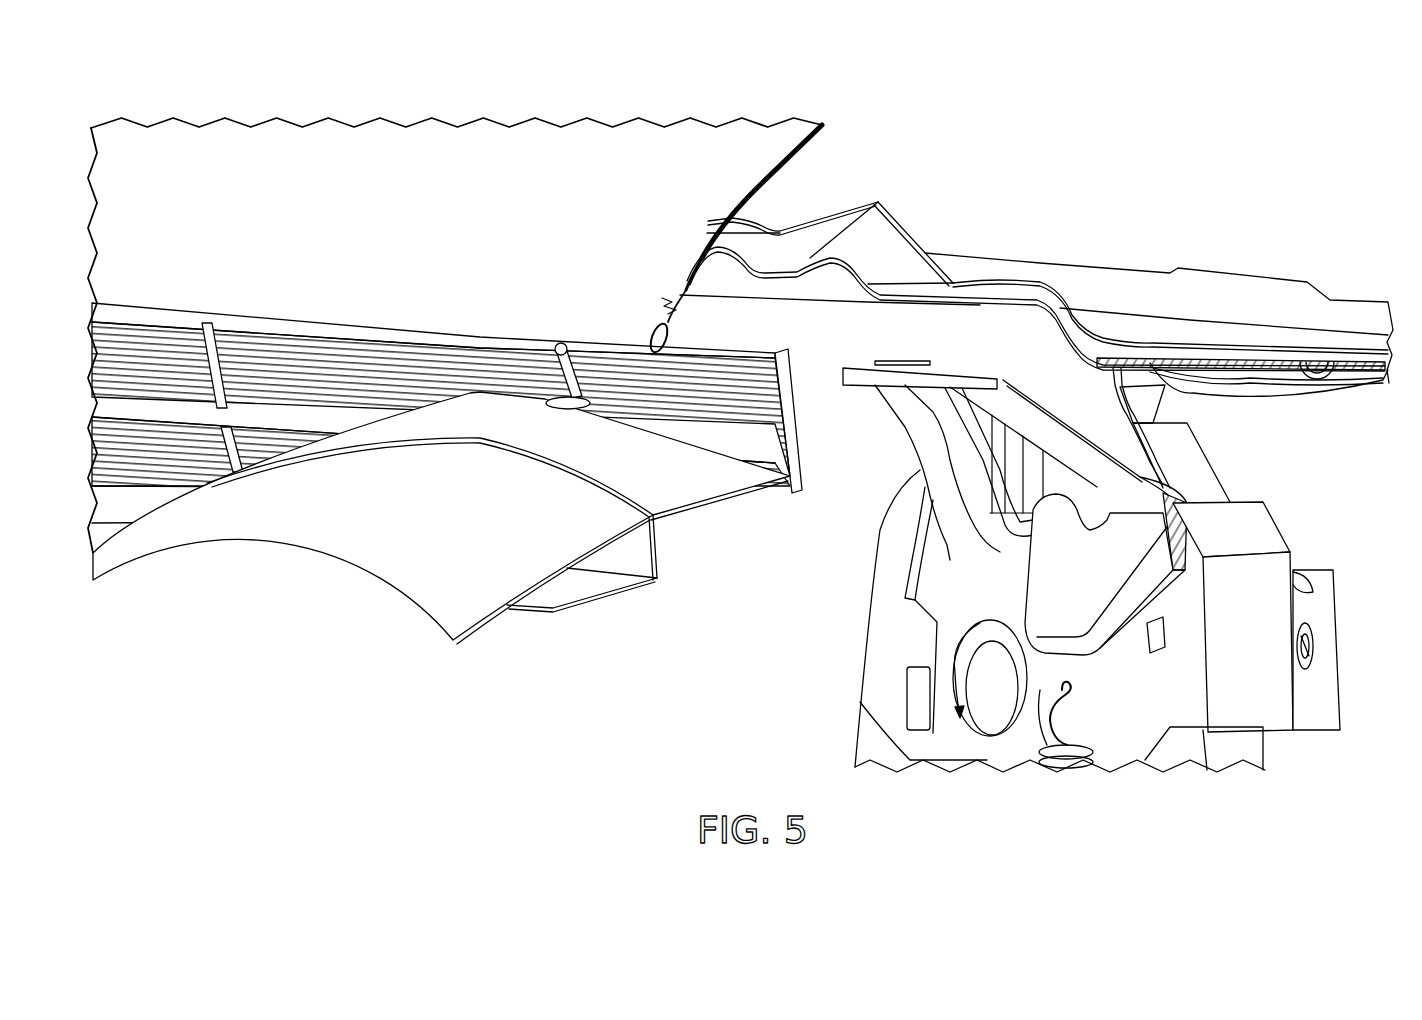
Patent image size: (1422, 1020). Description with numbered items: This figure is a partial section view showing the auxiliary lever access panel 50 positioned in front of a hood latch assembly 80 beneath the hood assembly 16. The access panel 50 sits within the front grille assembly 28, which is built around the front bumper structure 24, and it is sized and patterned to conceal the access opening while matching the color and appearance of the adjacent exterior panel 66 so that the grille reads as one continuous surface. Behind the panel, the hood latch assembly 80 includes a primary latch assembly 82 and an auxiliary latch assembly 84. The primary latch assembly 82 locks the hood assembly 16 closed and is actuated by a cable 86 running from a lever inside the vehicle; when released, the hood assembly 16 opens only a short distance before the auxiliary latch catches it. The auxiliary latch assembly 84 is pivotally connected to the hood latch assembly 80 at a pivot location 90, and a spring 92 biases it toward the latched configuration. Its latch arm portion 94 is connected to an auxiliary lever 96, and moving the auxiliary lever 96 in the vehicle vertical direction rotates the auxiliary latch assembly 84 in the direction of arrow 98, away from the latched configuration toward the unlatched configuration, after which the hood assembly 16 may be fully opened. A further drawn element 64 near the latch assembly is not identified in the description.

The hood assembly 16 is at (455, 318).
The front bumper structure 24 is at (441, 364).
The front grille assembly 28 is at (447, 347).
The auxiliary lever access panel 50 is at (686, 326).
The mounting bar 64 is at (1038, 376).
The exterior panel 66 is at (390, 355).
The hood latch assembly 80 is at (1342, 536).
The primary latch assembly 82 is at (1220, 499).
The auxiliary latch assembly 84 is at (911, 625).
The cable 86 is at (1208, 402).
The pivot location 90 is at (990, 713).
The spring 92 is at (1067, 765).
The latch arm portion 94 is at (884, 564).
The auxiliary lever 96 is at (1102, 502).
The arrow 98 is at (978, 620).